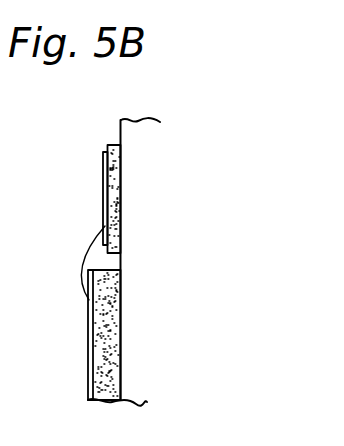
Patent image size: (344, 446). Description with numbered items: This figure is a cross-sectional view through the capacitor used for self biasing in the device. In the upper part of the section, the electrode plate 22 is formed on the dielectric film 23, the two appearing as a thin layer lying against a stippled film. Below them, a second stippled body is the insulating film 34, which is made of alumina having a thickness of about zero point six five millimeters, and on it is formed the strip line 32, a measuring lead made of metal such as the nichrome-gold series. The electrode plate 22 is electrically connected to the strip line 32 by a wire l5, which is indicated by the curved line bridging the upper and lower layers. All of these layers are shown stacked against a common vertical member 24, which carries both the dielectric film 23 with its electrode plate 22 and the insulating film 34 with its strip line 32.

The electrode plate 22 is at (103, 172).
The dielectric film 23 is at (119, 222).
The substrate 24 is at (140, 308).
The strip line 32 is at (93, 360).
The insulating film 34 is at (115, 375).
The wire l5 is at (81, 268).